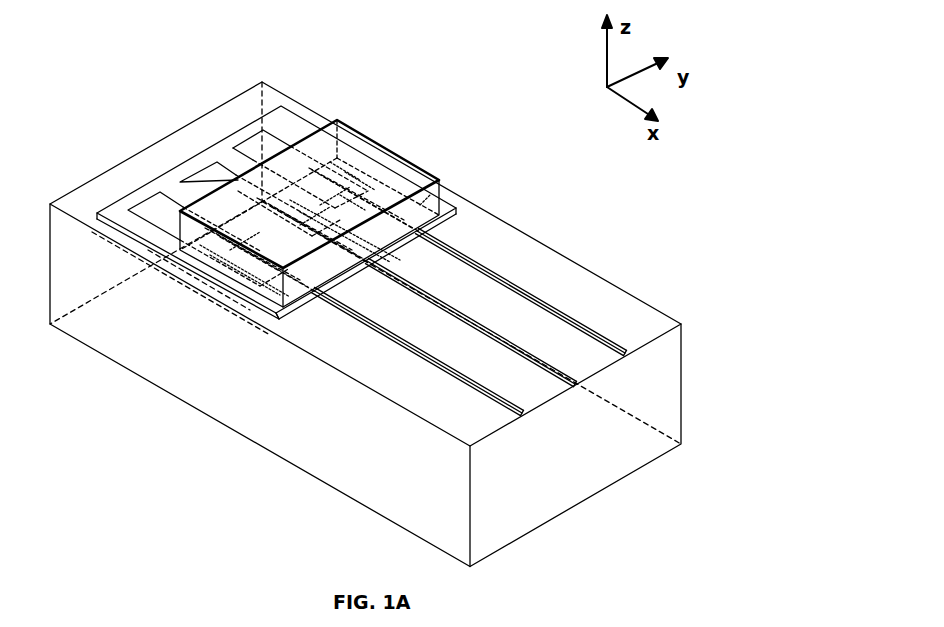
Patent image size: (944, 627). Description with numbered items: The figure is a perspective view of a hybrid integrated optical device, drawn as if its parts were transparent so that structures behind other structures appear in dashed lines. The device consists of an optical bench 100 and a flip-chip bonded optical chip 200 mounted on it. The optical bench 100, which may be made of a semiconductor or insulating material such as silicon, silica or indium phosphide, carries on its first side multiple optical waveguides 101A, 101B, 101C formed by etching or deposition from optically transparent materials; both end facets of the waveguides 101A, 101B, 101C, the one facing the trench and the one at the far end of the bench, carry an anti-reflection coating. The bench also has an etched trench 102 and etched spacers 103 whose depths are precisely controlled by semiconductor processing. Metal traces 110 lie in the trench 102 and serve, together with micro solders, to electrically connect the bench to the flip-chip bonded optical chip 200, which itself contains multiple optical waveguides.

The optical bench 100 is at (502, 219).
The optical waveguide 101A is at (508, 284).
The optical waveguide 101B is at (495, 330).
The optical waveguide 101C is at (492, 385).
The trench 102 is at (277, 125).
The spacer 103 is at (268, 309).
The metal trace 110 is at (148, 210).
The flip-chip bonded optical chip 200 is at (400, 152).